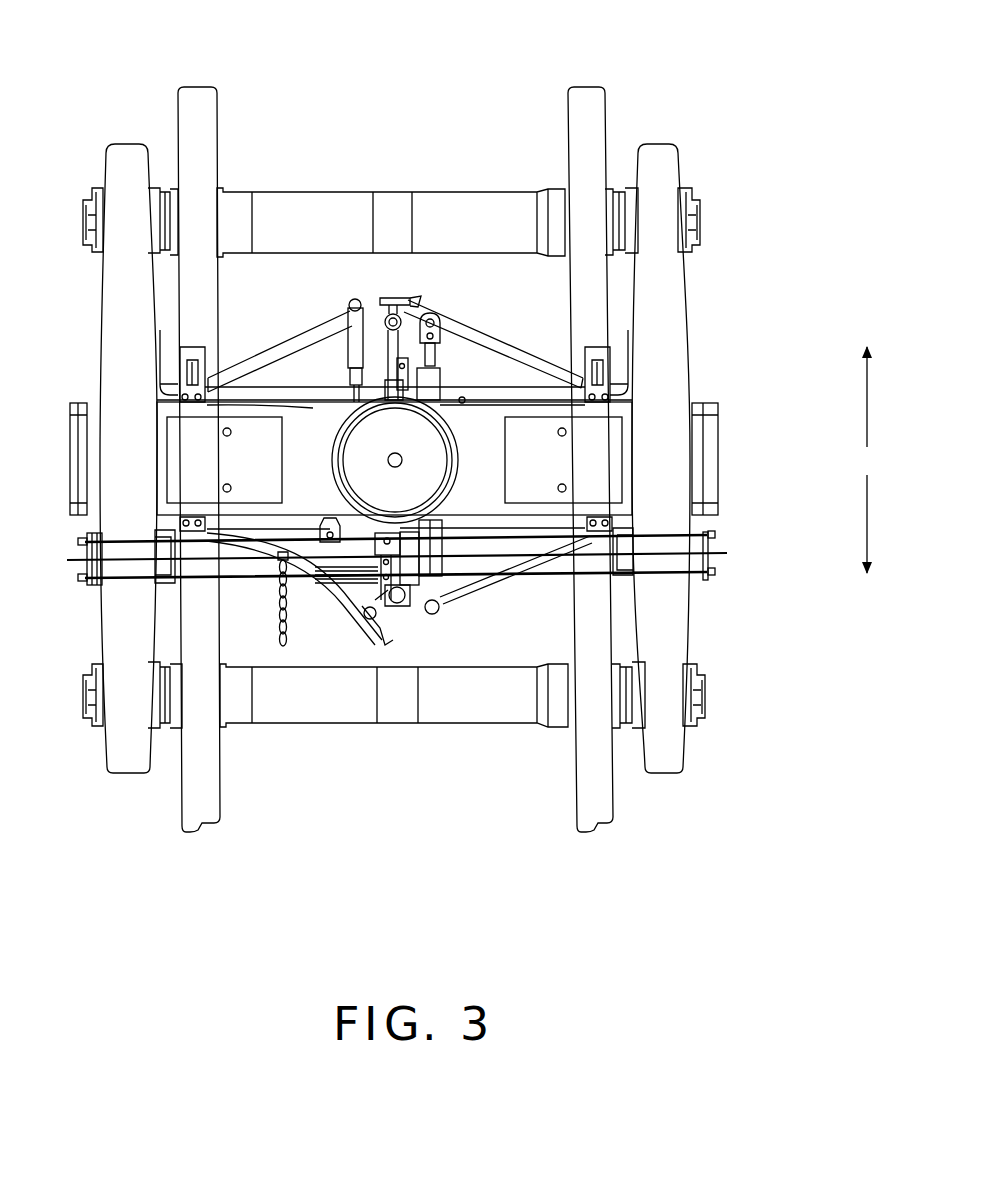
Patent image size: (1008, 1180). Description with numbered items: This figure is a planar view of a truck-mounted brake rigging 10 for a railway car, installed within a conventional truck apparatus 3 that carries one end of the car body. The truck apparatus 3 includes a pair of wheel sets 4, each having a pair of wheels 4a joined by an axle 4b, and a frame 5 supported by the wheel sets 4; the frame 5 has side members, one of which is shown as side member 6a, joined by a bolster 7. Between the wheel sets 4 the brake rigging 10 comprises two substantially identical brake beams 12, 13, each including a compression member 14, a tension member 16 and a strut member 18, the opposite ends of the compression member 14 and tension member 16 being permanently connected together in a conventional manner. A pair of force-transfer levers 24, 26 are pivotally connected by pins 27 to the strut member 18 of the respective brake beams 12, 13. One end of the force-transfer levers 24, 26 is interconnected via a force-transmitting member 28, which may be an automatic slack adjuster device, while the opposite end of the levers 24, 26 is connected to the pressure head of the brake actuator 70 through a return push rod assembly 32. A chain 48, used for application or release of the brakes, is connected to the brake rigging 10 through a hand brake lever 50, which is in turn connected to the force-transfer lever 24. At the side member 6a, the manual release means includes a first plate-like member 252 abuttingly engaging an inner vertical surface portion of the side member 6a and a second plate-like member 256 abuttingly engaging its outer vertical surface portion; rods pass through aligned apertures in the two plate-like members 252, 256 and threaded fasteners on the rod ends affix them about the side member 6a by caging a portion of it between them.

The truck apparatus 3 is at (690, 152).
The wheel set 4 is at (311, 190).
The wheel 4a is at (192, 88).
The axle 4b is at (456, 192).
The frame 5 is at (690, 281).
The side member 6a is at (688, 332).
The bolster 7 is at (598, 445).
The brake rigging 10 is at (441, 300).
The brake beam 12 is at (305, 600).
The brake beam 13 is at (292, 315).
The compression member 14 is at (500, 397).
The tension member 16 is at (527, 362).
The strut member 18 is at (398, 352).
The force-transfer lever 24 is at (412, 620).
The force-transfer lever 26 is at (372, 313).
The pin 27 is at (395, 312).
The force-transmitting member 28 is at (440, 558).
The return push rod assembly 32 is at (348, 353).
The chain 48 is at (256, 609).
The hand brake lever 50 is at (368, 615).
The brake actuator 70 is at (308, 543).
The first plate-like member 252 is at (618, 570).
The second plate-like member 256 is at (712, 553).